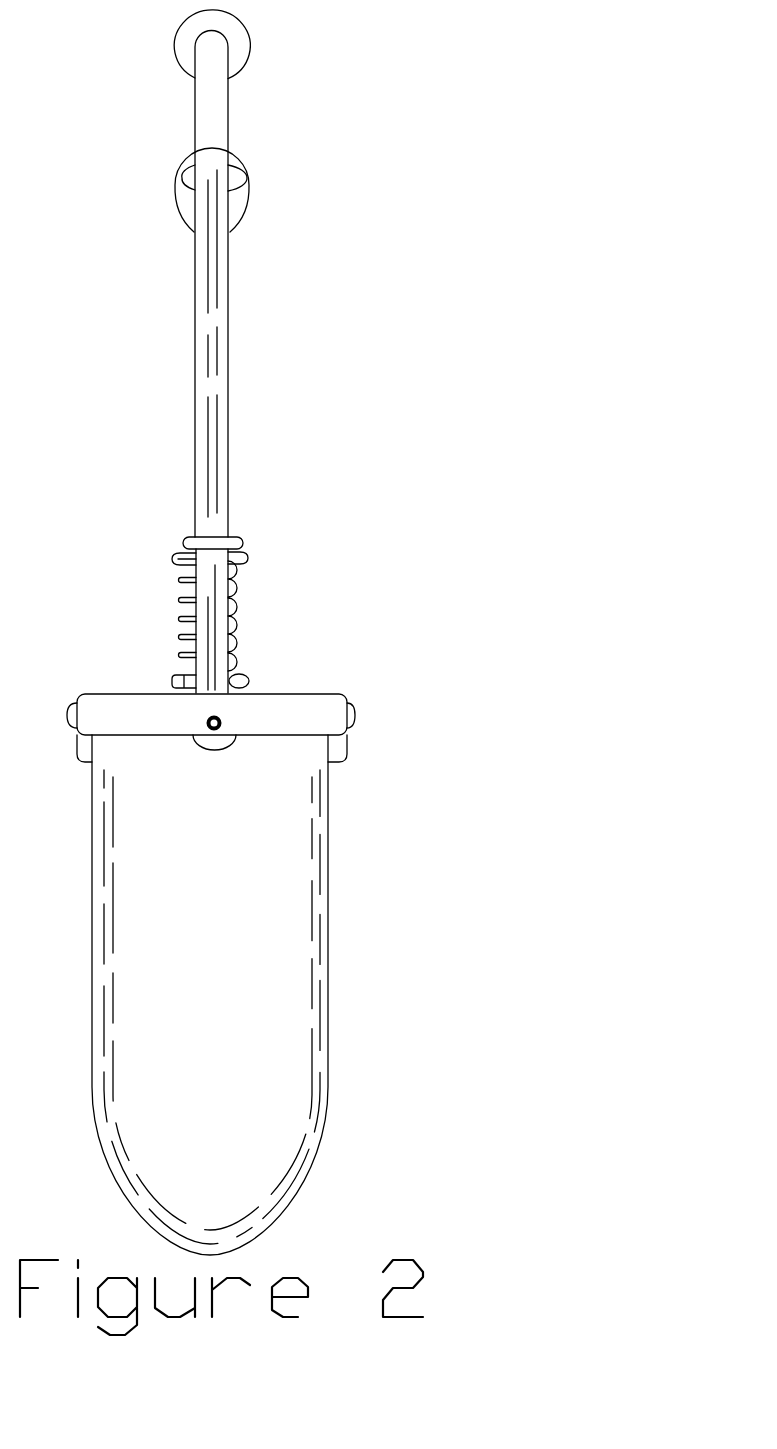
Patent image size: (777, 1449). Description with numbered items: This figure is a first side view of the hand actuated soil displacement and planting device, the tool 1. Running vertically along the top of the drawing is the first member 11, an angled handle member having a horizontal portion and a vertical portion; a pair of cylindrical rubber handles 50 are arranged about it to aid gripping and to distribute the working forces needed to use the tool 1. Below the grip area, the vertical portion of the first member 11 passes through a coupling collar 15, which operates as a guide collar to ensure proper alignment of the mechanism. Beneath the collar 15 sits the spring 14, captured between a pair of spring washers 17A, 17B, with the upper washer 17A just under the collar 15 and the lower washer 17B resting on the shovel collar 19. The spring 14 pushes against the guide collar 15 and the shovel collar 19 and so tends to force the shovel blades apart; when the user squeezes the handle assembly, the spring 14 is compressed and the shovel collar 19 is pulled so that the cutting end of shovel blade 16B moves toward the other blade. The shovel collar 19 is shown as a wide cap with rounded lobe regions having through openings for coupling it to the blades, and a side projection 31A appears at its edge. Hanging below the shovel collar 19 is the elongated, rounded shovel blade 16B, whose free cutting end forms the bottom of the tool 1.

The device 1 is at (303, 632).
The first member 11 is at (217, 342).
The rubber grips 50 is at (237, 52).
The coupling collar 15 is at (242, 545).
The spring 14 is at (183, 618).
The spring washer 17A is at (170, 562).
The spring washer 17B is at (183, 677).
The shovel collar 19 is at (277, 712).
The side tab 31A is at (355, 715).
The shovel blade 16B is at (250, 997).